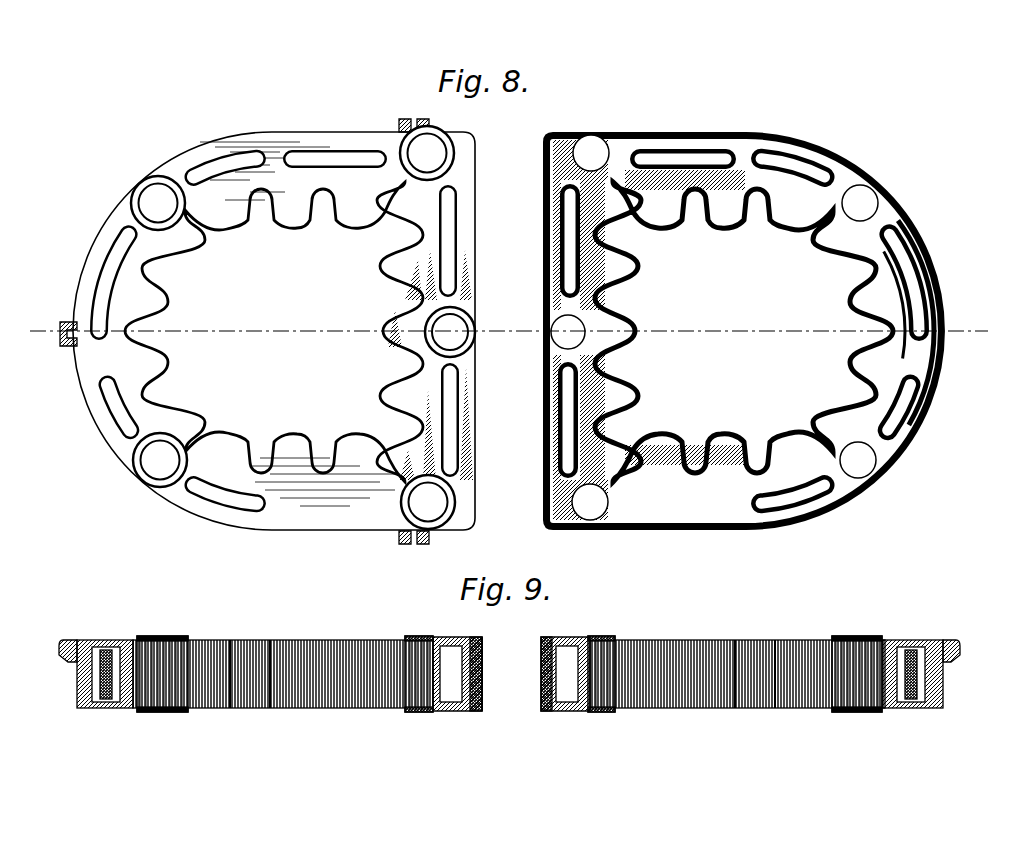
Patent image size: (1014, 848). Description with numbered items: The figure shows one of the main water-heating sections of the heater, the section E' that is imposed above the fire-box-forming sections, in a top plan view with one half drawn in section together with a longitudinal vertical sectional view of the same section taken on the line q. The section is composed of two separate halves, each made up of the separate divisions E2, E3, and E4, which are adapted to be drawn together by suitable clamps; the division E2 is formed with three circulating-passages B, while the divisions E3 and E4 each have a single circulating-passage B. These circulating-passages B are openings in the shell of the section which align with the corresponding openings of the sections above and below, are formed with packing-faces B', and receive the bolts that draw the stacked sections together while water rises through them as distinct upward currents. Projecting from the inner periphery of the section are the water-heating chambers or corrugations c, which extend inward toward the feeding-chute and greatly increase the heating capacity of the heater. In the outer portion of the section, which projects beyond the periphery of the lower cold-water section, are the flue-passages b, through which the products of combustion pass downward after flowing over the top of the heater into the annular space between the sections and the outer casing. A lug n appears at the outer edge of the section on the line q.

In FIG. 8, the circulating-passages B is at (503, 314).
In FIG. 9, the circulating-passages B is at (511, 672).
In FIG. 8, the packing-faces B' is at (314, 339).
In FIG. 9, the packing-faces B' is at (509, 673).
In FIG. 8, the flue-passages b is at (108, 268).
In FIG. 9, the flue-passages b is at (105, 648).
In FIG. 8, the serpentine opening c is at (240, 222).
In FIG. 9, the serpentine opening c is at (300, 708).
In FIG. 8, the main water-heating section E' is at (497, 122).
In FIG. 9, the main water-heating section E' is at (508, 657).
In FIG. 8, the section-division E2 is at (477, 298).
In FIG. 9, the section-division E2 is at (484, 672).
In FIG. 8, the section-division E3 is at (345, 208).
In FIG. 9, the section-division E3 is at (240, 648).
In FIG. 8, the section-division E4 is at (230, 432).
In FIG. 8, the section line q is at (503, 332).
In FIG. 8, the lug n is at (63, 352).
In FIG. 9, the lug n is at (68, 646).